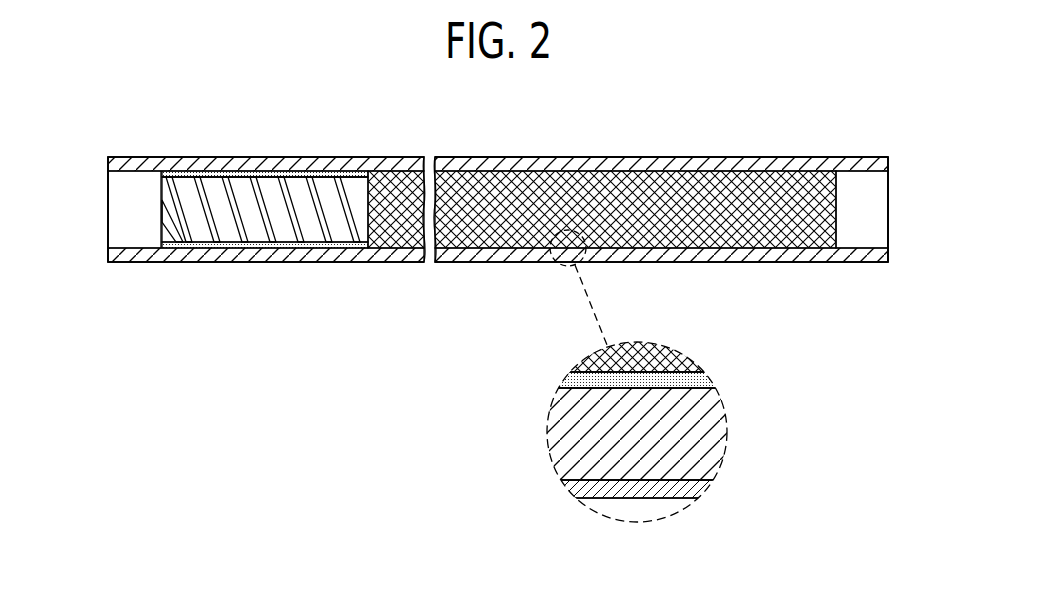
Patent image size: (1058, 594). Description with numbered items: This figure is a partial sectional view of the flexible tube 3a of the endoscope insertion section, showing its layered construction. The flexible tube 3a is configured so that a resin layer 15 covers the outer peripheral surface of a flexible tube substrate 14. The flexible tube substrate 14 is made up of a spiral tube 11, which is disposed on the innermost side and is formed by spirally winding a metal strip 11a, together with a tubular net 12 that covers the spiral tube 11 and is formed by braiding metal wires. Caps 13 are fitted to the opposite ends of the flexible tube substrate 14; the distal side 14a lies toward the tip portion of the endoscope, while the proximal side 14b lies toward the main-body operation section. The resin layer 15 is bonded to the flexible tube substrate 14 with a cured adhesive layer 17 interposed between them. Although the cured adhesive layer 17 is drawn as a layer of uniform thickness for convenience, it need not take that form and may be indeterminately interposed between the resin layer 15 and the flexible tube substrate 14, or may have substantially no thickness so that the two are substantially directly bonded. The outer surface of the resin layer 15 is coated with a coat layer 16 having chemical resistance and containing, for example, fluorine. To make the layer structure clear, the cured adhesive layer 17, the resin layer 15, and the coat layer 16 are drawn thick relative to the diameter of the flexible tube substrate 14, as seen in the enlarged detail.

The flexible tube 3a is at (575, 150).
The spiral tube 11 is at (327, 164).
The metal strip 11a is at (289, 162).
The tubular net 12 is at (320, 250).
The caps 13 is at (137, 237).
The flexible tube substrate 14 is at (488, 260).
The distal side 14a is at (108, 184).
The proximal side 14b is at (888, 186).
The resin layer 15 is at (724, 164).
The coat layer 16 is at (404, 158).
The cured adhesive layer 17 is at (700, 378).